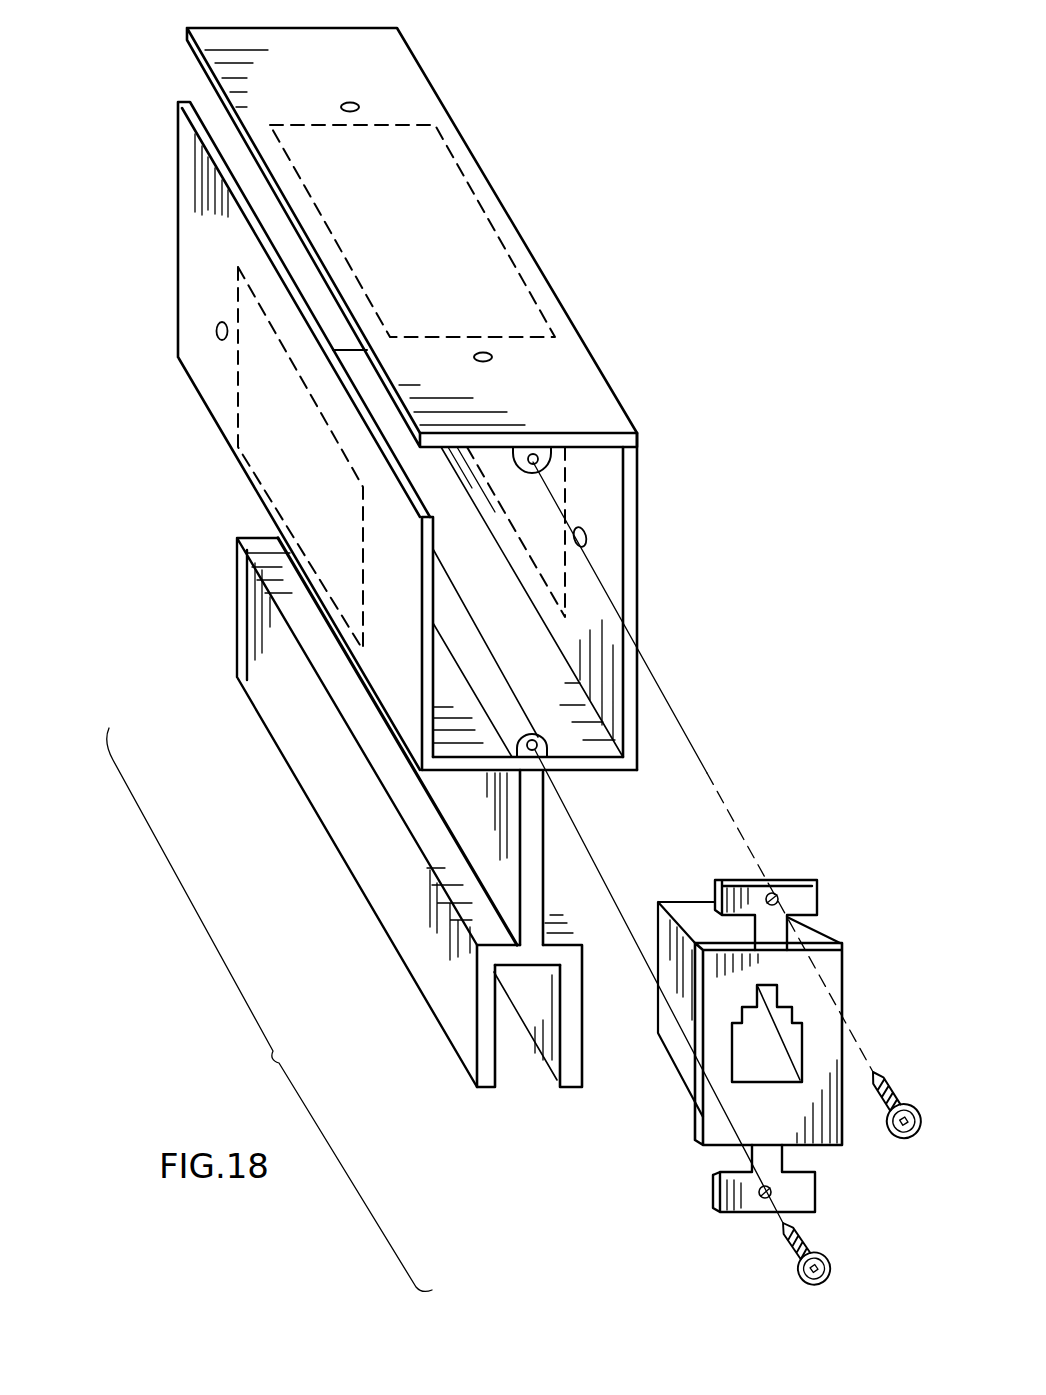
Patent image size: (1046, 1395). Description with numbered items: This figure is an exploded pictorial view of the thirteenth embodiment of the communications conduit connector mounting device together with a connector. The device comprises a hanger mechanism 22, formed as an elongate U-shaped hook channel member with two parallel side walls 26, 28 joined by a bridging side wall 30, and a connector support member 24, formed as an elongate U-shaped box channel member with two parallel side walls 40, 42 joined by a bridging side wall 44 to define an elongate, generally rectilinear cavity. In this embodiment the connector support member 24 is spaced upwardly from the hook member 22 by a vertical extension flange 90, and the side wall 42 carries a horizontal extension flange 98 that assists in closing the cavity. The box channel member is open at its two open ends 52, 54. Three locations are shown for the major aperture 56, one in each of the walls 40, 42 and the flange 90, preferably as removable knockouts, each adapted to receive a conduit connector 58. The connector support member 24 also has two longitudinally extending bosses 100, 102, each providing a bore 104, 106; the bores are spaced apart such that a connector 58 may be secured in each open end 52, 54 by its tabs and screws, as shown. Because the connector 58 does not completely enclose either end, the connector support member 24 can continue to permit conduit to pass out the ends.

The hanger mechanism 22 is at (220, 540).
The connector support member 24 is at (160, 31).
The side wall 26 is at (463, 1035).
The side wall 28 is at (568, 1047).
The bridging side wall 30 is at (542, 958).
The side wall 40 is at (425, 663).
The side wall 42 is at (638, 565).
The bridging side wall 44 is at (613, 771).
The open end 52 is at (641, 449).
The open end 54 is at (426, 35).
The major aperture 56 is at (476, 220).
The conduit connector 58 is at (835, 933).
The vertical extension flange 90 is at (536, 870).
The horizontal extension flange 98 is at (585, 433).
The longitudinally extending boss 100 is at (517, 702).
The longitudinally extending boss 102 is at (523, 452).
The bore 104 is at (545, 740).
The bore 106 is at (540, 447).